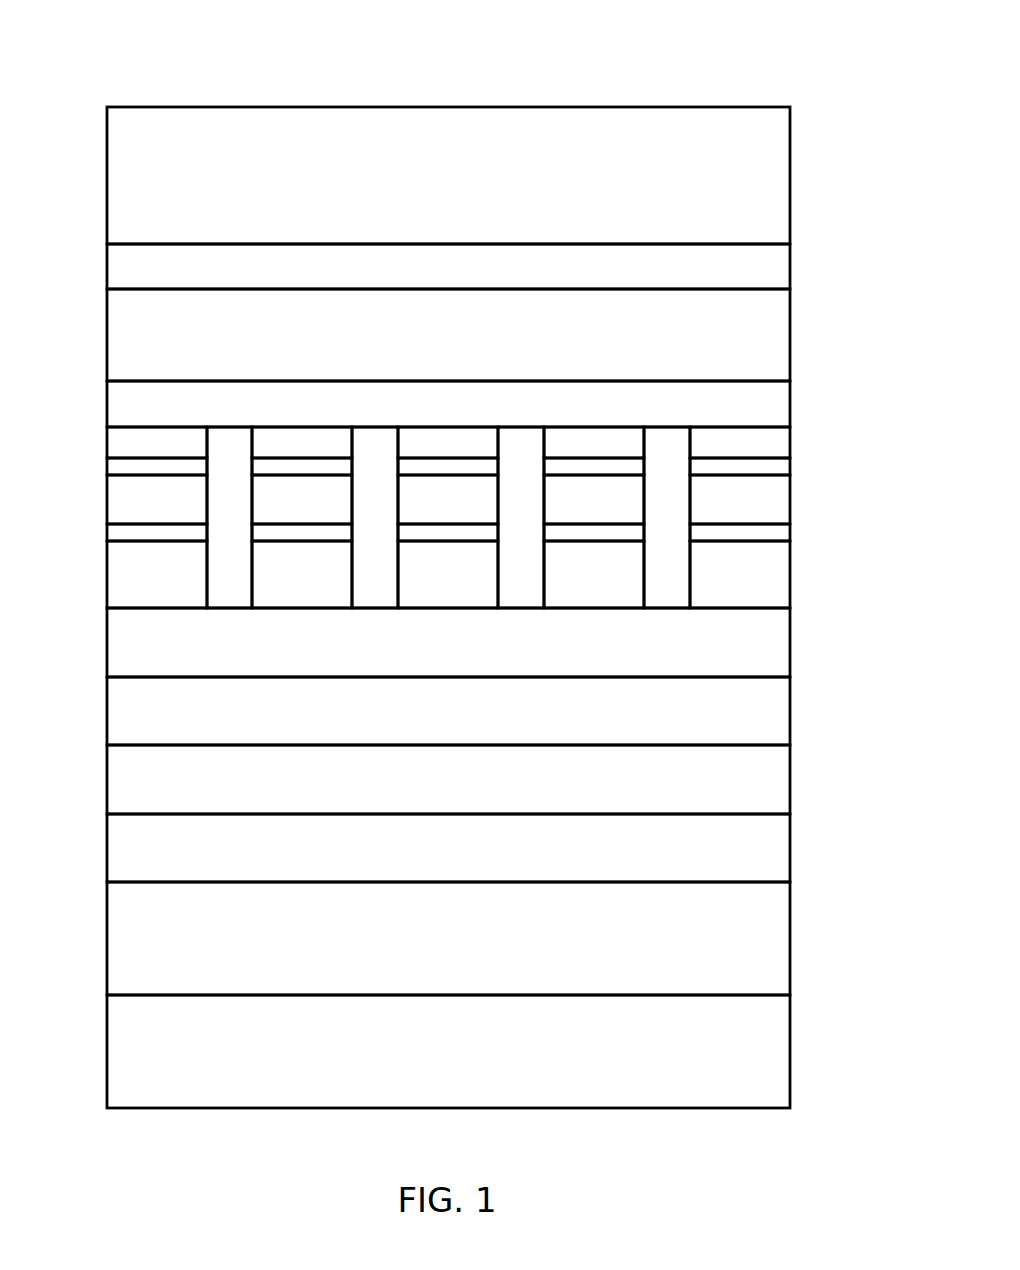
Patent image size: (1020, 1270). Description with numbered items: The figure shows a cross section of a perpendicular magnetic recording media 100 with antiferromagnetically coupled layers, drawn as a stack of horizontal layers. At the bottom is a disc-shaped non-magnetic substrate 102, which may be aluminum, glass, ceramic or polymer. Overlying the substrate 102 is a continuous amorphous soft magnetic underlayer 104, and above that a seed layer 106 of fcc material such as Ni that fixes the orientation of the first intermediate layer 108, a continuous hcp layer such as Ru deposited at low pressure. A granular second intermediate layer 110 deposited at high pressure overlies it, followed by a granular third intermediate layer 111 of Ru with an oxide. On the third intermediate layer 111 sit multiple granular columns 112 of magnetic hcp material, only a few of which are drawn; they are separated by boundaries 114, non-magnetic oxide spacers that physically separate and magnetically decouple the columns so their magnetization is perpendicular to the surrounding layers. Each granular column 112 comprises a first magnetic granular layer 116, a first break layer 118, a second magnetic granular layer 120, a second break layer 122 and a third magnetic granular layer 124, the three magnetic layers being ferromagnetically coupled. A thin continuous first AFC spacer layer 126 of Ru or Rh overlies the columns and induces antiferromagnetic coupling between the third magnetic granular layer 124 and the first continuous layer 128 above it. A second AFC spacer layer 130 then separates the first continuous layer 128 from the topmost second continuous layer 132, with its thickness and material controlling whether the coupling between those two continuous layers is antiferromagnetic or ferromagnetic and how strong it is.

The PMR media 100 is at (105, 68).
The substrate 102 is at (429, 1063).
The soft magnetic underlayer 104 is at (429, 950).
The seed layer 106 is at (429, 860).
The first intermediate layer 108 is at (429, 791).
The second intermediate layer 110 is at (429, 723).
The third intermediate layer 111 is at (429, 654).
The granular columns 112 is at (95, 428).
The boundaries 114 is at (518, 599).
The first magnetic granular layer 116 is at (138, 586).
The first break layer 118 is at (782, 534).
The second magnetic granular layer 120 is at (138, 512).
The second break layer 122 is at (782, 467).
The third magnetic granular layer 124 is at (138, 454).
The first AFC spacer layer 126 is at (429, 415).
The first continuous layer 128 is at (429, 347).
The second AFC spacer layer 130 is at (429, 278).
The second continuous layer 132 is at (429, 188).